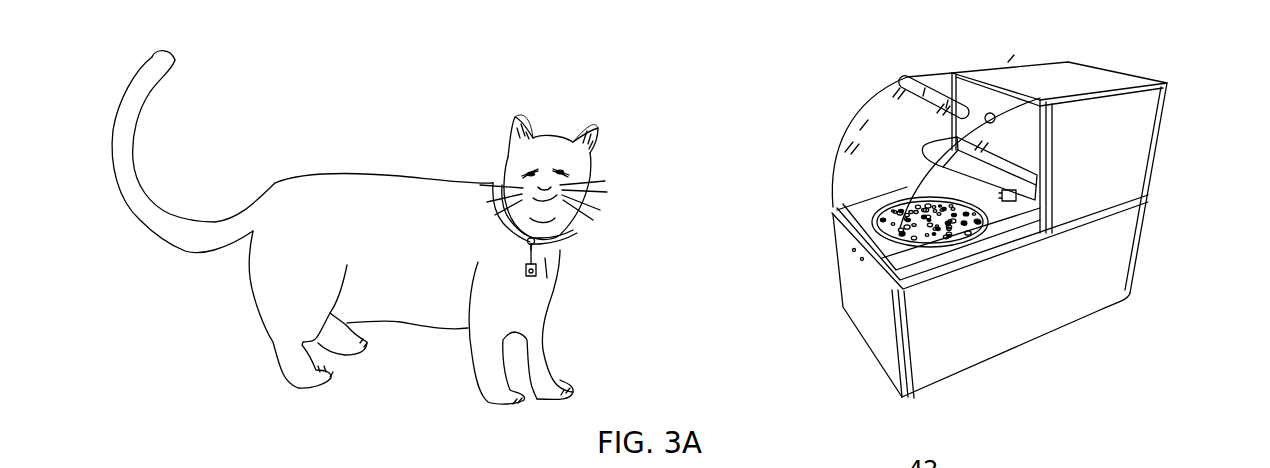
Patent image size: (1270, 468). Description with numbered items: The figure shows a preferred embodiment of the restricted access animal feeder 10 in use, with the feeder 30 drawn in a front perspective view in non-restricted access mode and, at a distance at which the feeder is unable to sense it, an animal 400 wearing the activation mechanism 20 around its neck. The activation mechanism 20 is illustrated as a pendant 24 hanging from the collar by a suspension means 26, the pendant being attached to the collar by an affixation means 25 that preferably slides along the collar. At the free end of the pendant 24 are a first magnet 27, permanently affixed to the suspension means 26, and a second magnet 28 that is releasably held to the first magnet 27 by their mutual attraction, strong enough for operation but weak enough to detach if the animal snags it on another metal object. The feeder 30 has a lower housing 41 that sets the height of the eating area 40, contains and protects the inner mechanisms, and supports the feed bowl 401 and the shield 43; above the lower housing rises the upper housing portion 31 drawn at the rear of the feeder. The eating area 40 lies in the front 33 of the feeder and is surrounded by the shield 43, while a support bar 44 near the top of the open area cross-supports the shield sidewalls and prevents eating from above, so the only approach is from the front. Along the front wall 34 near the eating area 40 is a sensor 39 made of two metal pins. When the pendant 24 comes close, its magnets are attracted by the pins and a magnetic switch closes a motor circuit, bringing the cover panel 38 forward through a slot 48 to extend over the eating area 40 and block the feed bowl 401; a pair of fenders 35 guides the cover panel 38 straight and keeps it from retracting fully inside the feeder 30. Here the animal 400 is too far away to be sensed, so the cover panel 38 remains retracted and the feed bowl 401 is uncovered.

The restricted access animal feeder 10 is at (967, 213).
The activation mechanism 20 is at (567, 240).
The pendant 24 is at (548, 264).
The affixation means 25 is at (524, 239).
The suspension means 26 is at (525, 270).
The first magnet 27 is at (528, 267).
The second magnet 28 is at (532, 276).
The feeder 30 is at (972, 213).
The upper compartment 31 is at (1150, 121).
The front 33 is at (807, 216).
The front wall 34 is at (878, 345).
The fenders 35 is at (1018, 196).
The cover panel 38 is at (967, 155).
The sensor 39 is at (852, 250).
The eating area 40 is at (939, 250).
The lower housing 41 is at (1123, 278).
The shield 43 is at (861, 112).
The support bar 44 is at (910, 80).
The slot 48 is at (1035, 178).
The animal 400 is at (392, 227).
The feed bowl 401 is at (960, 237).